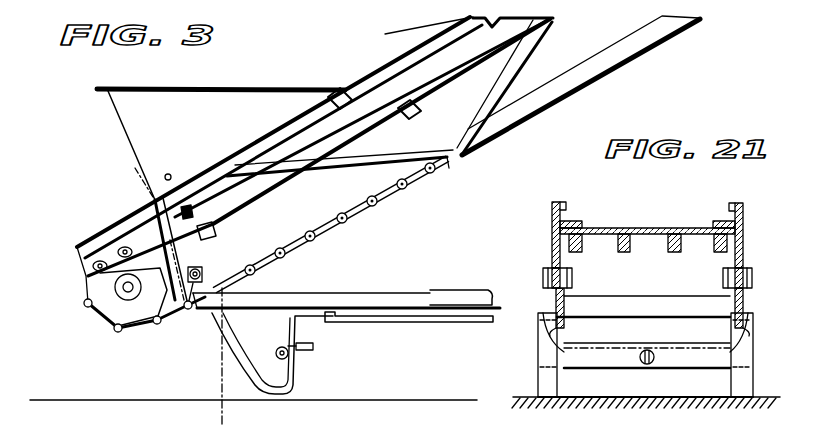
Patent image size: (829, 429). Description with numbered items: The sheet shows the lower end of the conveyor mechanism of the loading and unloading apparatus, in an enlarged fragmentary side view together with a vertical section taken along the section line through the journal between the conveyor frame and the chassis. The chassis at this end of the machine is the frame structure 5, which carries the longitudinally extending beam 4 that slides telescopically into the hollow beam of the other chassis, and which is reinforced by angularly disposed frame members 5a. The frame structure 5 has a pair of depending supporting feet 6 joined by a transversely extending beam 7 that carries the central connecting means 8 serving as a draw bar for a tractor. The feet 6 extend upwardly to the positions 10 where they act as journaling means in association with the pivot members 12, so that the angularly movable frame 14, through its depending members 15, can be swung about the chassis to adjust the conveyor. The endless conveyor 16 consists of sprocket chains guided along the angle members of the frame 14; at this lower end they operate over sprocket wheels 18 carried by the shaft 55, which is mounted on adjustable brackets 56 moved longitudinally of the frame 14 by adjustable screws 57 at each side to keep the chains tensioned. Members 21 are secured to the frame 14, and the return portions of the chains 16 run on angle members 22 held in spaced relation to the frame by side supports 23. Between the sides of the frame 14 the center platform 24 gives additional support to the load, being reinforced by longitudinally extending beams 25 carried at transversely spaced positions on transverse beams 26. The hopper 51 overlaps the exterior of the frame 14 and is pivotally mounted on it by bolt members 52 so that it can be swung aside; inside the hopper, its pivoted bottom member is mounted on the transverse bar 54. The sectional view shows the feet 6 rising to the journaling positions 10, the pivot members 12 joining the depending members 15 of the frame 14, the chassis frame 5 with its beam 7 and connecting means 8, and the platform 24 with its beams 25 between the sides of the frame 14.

In FIG. 3, the longitudinally extending beam 4 is at (455, 300).
In FIG. 3, the frame structure 5 is at (314, 302).
In FIG. 21, the frame structure 5 is at (553, 303).
In FIG. 3, the angularly disposed frame members 5a is at (418, 321).
In FIG. 3, the depending supporting feet 6 is at (262, 390).
In FIG. 21, the depending supporting feet 6 is at (557, 385).
In FIG. 3, the transversely extending beam 7 is at (313, 345).
In FIG. 21, the transversely extending beam 7 is at (684, 362).
In FIG. 3, the central connecting means 8 is at (305, 368).
In FIG. 21, the central connecting means 8 is at (647, 364).
In FIG. 3, the journaling positions 10 is at (212, 282).
In FIG. 21, the journaling positions 10 is at (567, 270).
In FIG. 3, the pivot members 12 is at (217, 262).
In FIG. 21, the pivot members 12 is at (543, 276).
In FIG. 3, the angularly movable frame 14 is at (483, 32).
In FIG. 21, the angularly movable frame 14 is at (566, 203).
In FIG. 3, the depending members 15 is at (207, 212).
In FIG. 21, the depending members 15 is at (551, 232).
In FIG. 3, the endless conveyor 16 is at (350, 215).
In FIG. 3, the sprocket wheels 18 is at (100, 306).
In FIG. 3, the members 21 is at (238, 417).
In FIG. 3, the angle members 22 is at (553, 100).
In FIG. 3, the side supports 23 is at (320, 172).
In FIG. 21, the side supports 23 is at (590, 235).
In FIG. 3, the center platform 24 is at (385, 98).
In FIG. 21, the center platform 24 is at (652, 228).
In FIG. 3, the longitudinally extending beams 25 is at (441, 74).
In FIG. 3, the transverse beams 26 is at (421, 111).
In FIG. 3, the hopper 51 is at (223, 103).
In FIG. 3, the bolt members 52 is at (328, 94).
In FIG. 3, the transverse bar 54 is at (165, 175).
In FIG. 3, the shaft 55 is at (128, 292).
In FIG. 3, the adjustable brackets 56 is at (107, 250).
In FIG. 3, the adjustable screws 57 is at (122, 212).